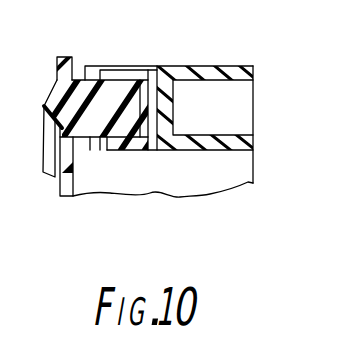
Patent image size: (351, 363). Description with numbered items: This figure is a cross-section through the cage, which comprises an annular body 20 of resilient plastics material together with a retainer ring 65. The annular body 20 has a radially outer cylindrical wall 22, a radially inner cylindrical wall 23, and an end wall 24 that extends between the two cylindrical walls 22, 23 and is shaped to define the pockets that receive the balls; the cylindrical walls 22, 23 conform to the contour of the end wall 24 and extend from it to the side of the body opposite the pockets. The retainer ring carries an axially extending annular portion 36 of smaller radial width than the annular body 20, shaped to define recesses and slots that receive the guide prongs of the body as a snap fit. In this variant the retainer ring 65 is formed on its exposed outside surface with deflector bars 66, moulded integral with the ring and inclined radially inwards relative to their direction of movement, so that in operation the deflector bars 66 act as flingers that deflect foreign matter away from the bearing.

The annular body 20 is at (253, 117).
The radially outer cylindrical wall 22 is at (255, 67).
The radially inner cylindrical wall 23 is at (250, 184).
The end wall 24 is at (170, 92).
The axially extending annular portion 36 is at (101, 113).
The retainer ring 65 is at (57, 71).
The deflector bars 66 is at (40, 127).